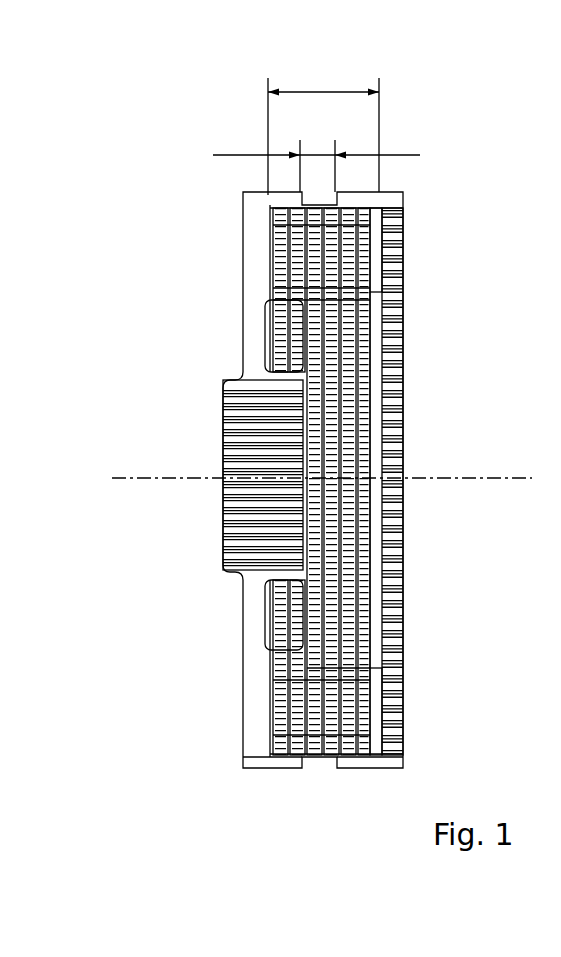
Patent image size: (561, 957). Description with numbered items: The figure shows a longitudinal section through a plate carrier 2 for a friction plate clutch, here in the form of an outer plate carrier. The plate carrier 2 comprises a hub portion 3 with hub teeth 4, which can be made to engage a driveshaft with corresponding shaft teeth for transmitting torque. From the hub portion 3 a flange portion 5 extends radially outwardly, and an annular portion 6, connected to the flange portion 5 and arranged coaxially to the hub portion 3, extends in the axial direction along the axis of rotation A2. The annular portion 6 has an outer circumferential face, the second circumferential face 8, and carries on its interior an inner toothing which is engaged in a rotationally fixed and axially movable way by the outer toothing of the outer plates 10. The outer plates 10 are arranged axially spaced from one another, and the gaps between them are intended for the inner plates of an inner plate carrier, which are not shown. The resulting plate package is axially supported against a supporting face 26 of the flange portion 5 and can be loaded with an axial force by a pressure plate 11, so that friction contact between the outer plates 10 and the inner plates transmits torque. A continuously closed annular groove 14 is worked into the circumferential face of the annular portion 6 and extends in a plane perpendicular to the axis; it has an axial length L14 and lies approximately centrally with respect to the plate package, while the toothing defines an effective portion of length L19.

The plate carrier 2 is at (304, 463).
The hub portion 3 is at (228, 573).
The hub teeth 4 is at (238, 528).
The flange portion 5 is at (248, 663).
The annular portion 6 is at (295, 770).
The second circumferential face 8 is at (368, 770).
The outer plates 10 is at (363, 241).
The pressure plate 11 is at (373, 268).
The groove 14 is at (320, 768).
The supporting face 26 is at (274, 248).
The axis of rotation A2 is at (462, 478).
The length of effective portion L19 is at (323, 127).
The axial length of annular groove L14 is at (316, 156).